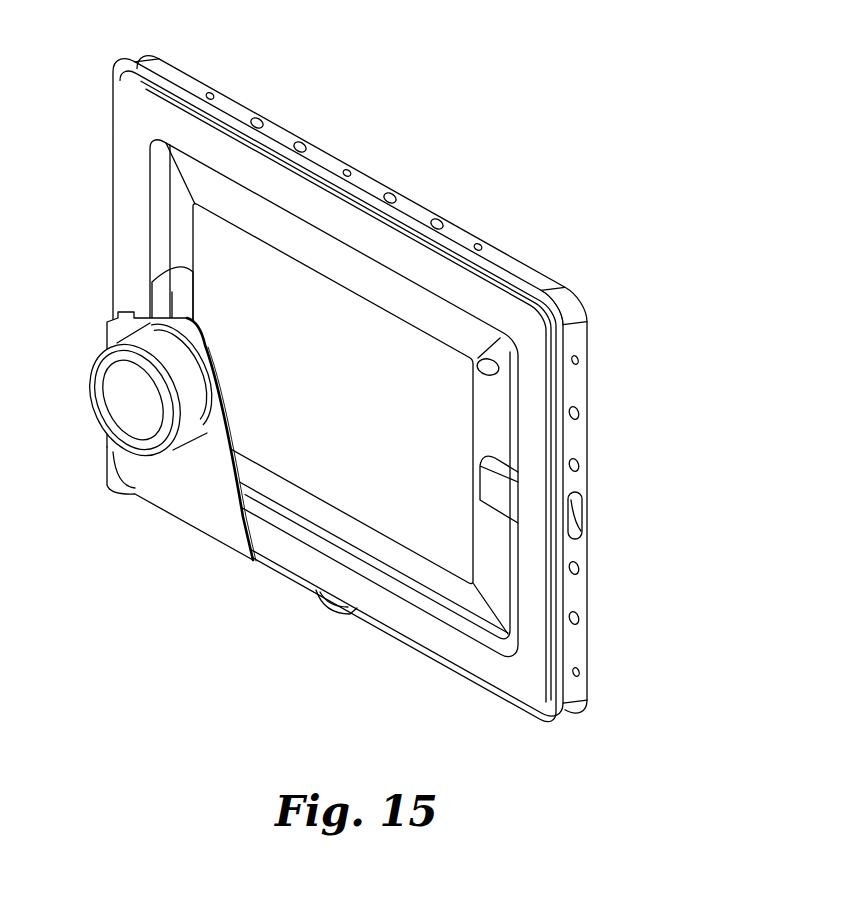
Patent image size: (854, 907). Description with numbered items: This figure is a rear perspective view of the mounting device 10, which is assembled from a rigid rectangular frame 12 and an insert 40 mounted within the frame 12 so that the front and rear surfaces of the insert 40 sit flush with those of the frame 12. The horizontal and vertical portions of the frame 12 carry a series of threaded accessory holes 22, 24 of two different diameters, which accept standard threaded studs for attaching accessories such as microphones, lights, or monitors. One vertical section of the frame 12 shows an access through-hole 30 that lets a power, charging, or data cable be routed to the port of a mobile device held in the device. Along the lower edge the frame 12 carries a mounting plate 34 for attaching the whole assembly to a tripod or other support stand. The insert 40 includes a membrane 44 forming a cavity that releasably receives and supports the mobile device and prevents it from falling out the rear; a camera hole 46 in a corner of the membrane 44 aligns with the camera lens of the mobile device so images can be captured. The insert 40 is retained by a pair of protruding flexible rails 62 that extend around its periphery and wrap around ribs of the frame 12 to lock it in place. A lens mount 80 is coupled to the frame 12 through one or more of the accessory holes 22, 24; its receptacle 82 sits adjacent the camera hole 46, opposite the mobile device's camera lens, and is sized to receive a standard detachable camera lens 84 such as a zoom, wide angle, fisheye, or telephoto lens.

The mounting device 10 is at (474, 142).
The frame 12 is at (500, 267).
The threaded accessory hole 22 is at (300, 146).
The threaded accessory hole 24 is at (210, 95).
The access through-hole 30 is at (574, 512).
The mounting plate 34 is at (330, 603).
The insert 40 is at (293, 493).
The membrane 44 is at (326, 396).
The camera hole 46 is at (480, 364).
The flexible rail 62 is at (527, 328).
The lens mount 80 is at (200, 472).
The receptacle 82 is at (135, 322).
The detachable camera lens 84 is at (127, 388).